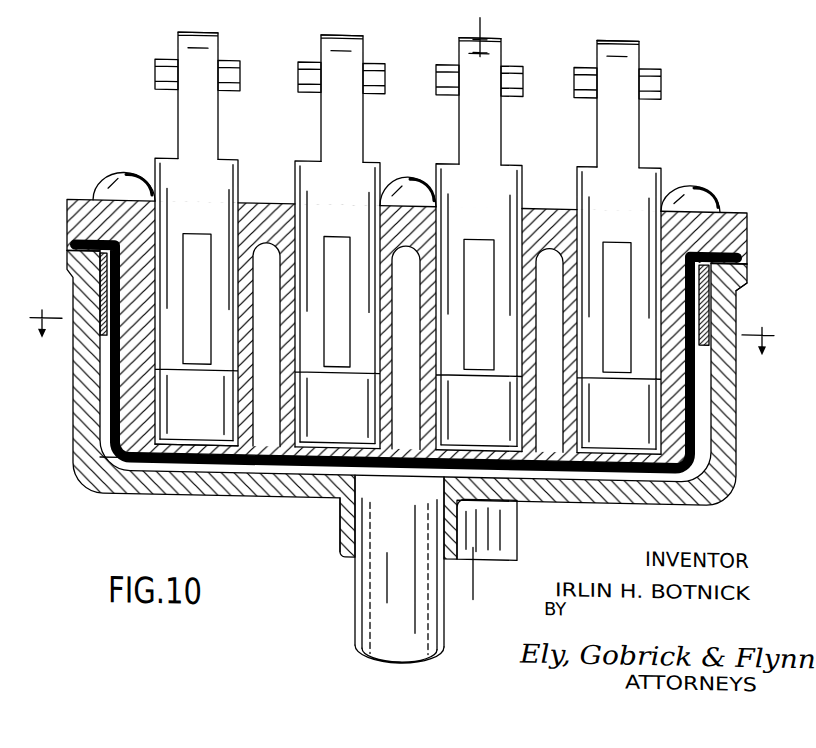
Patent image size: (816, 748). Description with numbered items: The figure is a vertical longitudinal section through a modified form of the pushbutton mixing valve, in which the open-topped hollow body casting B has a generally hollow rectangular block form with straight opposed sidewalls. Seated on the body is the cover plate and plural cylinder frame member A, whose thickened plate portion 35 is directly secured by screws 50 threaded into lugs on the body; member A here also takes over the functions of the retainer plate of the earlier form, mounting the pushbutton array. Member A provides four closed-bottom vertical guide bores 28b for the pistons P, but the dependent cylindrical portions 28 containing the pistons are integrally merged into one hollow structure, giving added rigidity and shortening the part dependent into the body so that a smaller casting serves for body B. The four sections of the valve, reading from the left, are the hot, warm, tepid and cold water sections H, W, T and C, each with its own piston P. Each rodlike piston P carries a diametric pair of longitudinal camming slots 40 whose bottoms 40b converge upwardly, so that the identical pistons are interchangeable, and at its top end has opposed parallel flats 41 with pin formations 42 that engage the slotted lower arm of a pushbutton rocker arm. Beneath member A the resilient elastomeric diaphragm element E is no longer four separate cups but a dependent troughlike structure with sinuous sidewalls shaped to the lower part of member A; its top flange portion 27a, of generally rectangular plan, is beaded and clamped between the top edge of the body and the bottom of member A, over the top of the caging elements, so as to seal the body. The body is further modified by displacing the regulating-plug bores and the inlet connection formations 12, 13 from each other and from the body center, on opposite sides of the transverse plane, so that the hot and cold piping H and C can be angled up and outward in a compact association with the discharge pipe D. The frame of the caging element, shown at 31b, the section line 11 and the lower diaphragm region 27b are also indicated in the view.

The cover plate and plural cylinder frame member A is at (64, 195).
The hollow body casting B is at (70, 410).
The camming piston P is at (219, 129).
The discharge pipe D is at (350, 572).
The elastomeric diaphragm element E is at (105, 446).
The hot water section H is at (198, 18).
The warm water section W is at (342, 18).
The tepid water section T is at (481, 20).
The cold water section C is at (618, 22).
The section line 11- 11 is at (406, 345).
The inlet connection formation 12 is at (472, 16).
The inlet connection formation 13 is at (340, 512).
The top flange portion 27a is at (747, 217).
The upper flange shoulder 27b is at (740, 238).
The cylindrical portion 28 is at (118, 383).
The piston bore 28b is at (196, 432).
The seal strip 31b is at (67, 271).
The plate portion 35 is at (110, 216).
The longitudinal camming slot 40 is at (192, 230).
The slot bottom 40b is at (617, 360).
The parallel flats 41 is at (178, 42).
The pin formation 42 is at (240, 70).
The screw 50 is at (132, 173).